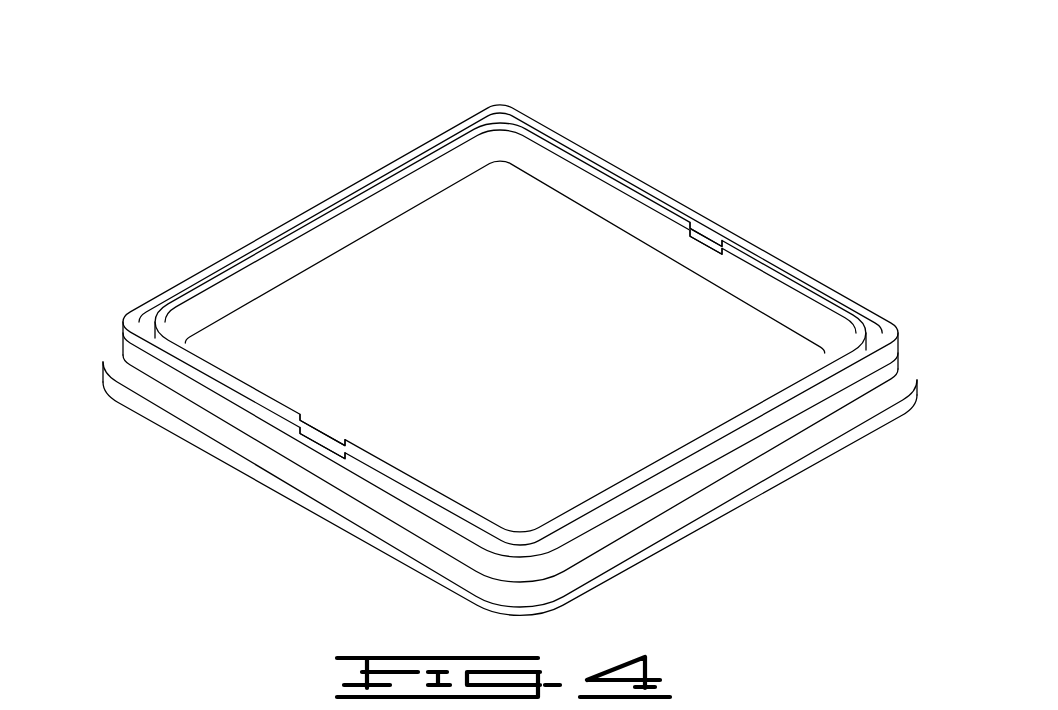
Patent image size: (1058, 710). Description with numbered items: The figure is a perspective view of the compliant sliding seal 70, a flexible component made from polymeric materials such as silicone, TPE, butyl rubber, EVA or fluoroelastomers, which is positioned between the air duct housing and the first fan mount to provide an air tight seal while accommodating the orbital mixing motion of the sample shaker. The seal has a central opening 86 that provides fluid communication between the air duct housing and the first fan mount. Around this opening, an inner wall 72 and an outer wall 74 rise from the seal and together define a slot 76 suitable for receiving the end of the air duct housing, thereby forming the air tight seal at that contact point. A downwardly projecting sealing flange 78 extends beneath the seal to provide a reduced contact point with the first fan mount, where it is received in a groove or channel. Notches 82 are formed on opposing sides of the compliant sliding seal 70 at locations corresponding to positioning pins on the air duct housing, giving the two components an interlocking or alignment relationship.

The compliant sliding seal 70 is at (278, 99).
The inner wall 72 is at (323, 243).
The outer wall 74 is at (823, 410).
The slot 76 is at (145, 330).
The downwardly projecting sealing flange 78 is at (693, 528).
The notch 82 is at (718, 237).
The central opening 86 is at (535, 245).